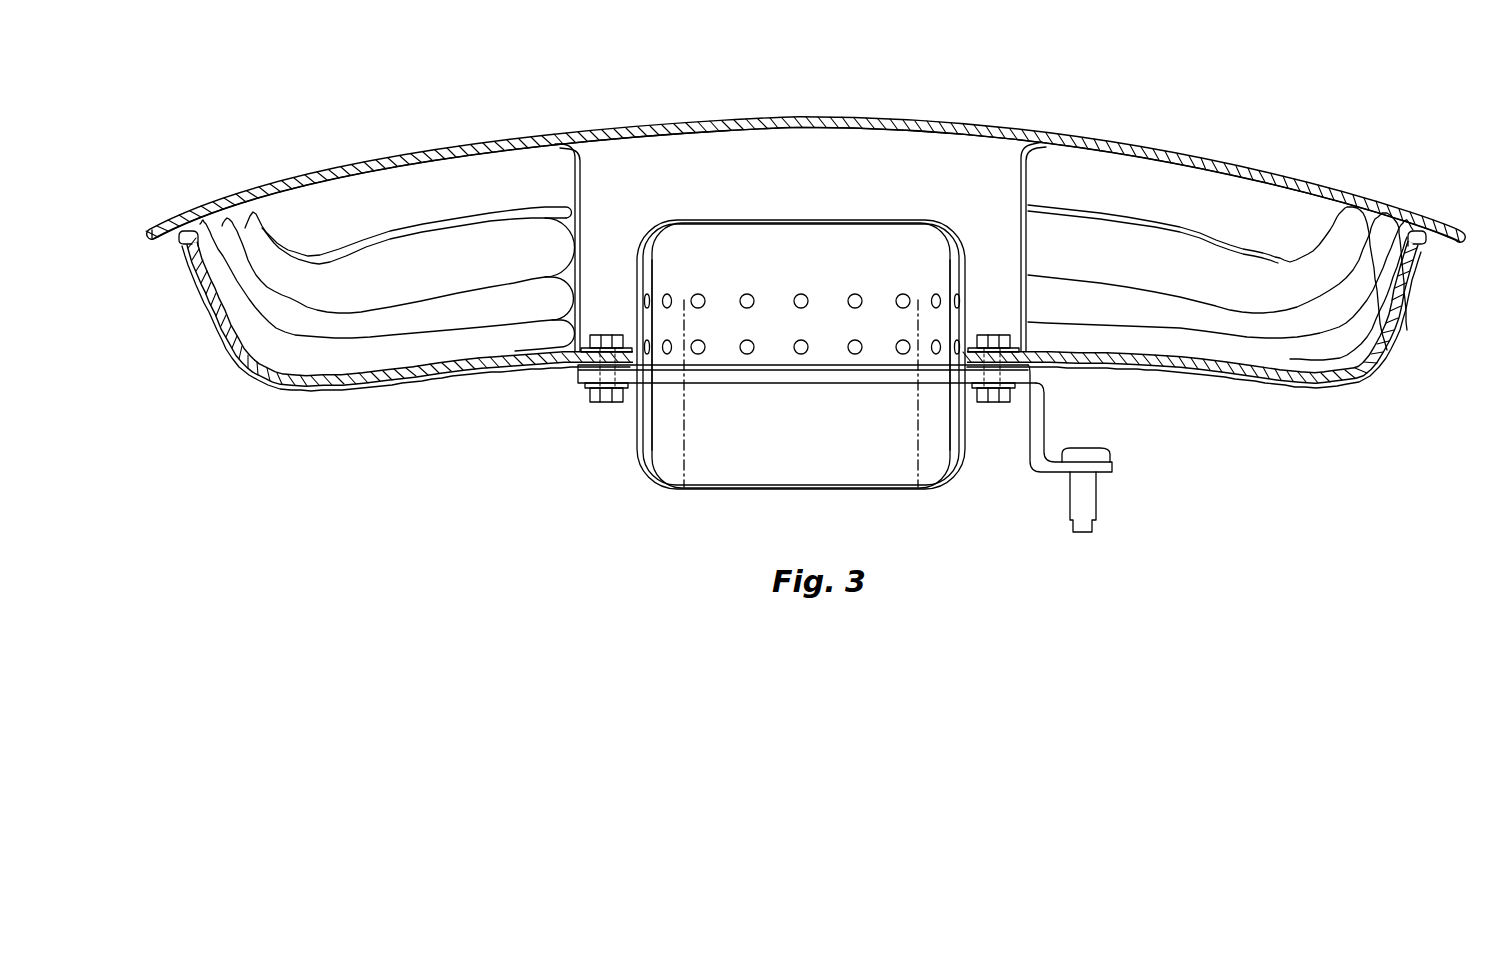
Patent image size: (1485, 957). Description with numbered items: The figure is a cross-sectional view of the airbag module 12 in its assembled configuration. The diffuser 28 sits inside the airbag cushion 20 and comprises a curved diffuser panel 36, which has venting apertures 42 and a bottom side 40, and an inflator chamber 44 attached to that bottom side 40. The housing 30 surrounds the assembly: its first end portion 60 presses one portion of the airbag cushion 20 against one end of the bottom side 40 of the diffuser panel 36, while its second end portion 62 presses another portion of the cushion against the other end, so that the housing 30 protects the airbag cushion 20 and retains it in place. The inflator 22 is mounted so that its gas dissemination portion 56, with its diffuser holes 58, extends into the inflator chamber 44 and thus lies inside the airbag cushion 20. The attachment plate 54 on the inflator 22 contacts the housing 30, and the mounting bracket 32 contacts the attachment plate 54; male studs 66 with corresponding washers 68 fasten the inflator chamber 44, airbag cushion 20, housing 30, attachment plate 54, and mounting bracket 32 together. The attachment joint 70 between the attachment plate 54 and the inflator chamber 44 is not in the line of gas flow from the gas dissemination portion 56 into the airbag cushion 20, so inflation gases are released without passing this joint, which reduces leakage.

The airbag module 12 is at (255, 143).
The airbag cushion 20 is at (417, 350).
The inflator 22 is at (880, 496).
The diffuser 28 is at (200, 230).
The housing 30 is at (294, 385).
The mounting bracket 32 is at (668, 479).
The diffuser panel 36 is at (702, 119).
The bottom side 40 is at (672, 130).
The venting apertures 42 is at (643, 128).
The inflator chamber 44 is at (1033, 180).
The attachment plate 54 is at (582, 372).
The gas dissemination portion 56 is at (822, 220).
The diffuser holes 58 is at (696, 295).
The first end portion 60 is at (187, 248).
The second end portion 62 is at (1412, 268).
The male studs 66 is at (613, 334).
The washers 68 is at (618, 404).
The attachment joint 70 is at (1057, 383).